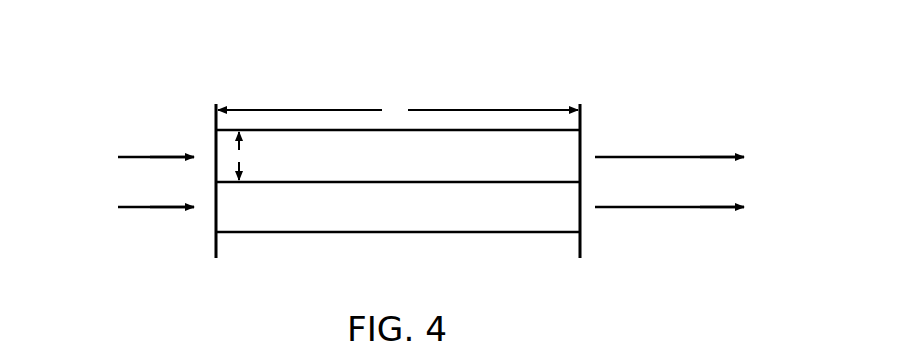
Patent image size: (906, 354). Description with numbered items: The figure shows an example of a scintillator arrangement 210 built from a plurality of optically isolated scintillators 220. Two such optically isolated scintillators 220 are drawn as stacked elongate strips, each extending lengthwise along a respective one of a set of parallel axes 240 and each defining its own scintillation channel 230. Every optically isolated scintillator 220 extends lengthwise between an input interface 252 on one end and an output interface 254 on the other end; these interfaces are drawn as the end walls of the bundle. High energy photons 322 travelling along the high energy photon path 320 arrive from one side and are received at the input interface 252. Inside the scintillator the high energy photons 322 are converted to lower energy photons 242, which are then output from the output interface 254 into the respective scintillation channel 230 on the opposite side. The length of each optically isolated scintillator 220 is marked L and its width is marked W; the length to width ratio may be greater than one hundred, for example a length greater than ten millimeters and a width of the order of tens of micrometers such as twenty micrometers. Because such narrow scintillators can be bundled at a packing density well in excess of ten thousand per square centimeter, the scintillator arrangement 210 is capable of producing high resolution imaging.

The scintillator arrangement 210 is at (422, 77).
The optically isolated scintillator 220 is at (423, 169).
The scintillation channel 230 is at (817, 169).
The parallel axis 240 is at (643, 155).
The lower energy photons 242 is at (748, 155).
The input interface 252 is at (214, 145).
The output interface 254 is at (582, 145).
The high energy photon path 320 is at (118, 157).
The high energy photons 322 is at (167, 155).